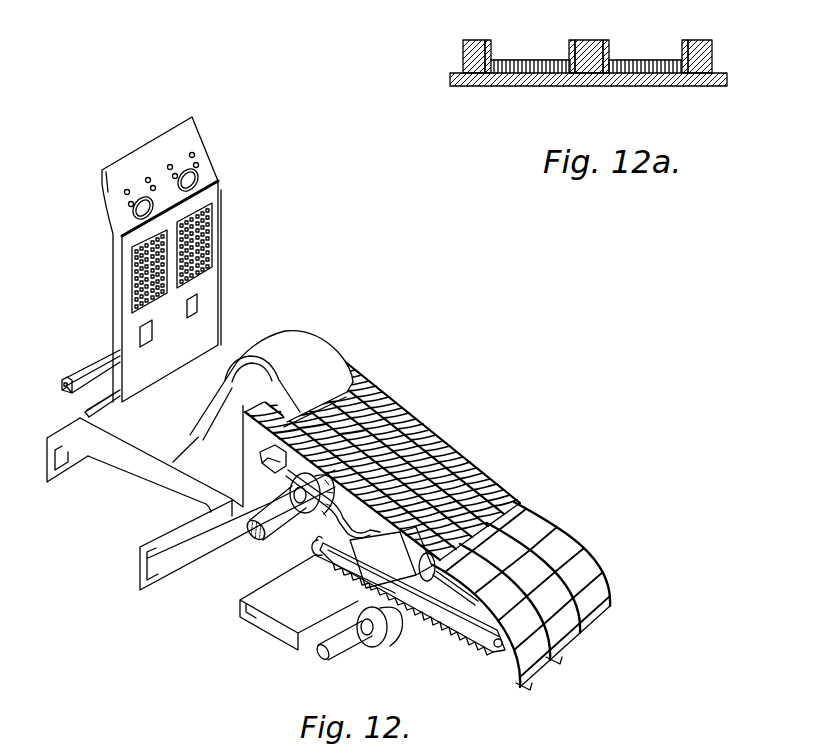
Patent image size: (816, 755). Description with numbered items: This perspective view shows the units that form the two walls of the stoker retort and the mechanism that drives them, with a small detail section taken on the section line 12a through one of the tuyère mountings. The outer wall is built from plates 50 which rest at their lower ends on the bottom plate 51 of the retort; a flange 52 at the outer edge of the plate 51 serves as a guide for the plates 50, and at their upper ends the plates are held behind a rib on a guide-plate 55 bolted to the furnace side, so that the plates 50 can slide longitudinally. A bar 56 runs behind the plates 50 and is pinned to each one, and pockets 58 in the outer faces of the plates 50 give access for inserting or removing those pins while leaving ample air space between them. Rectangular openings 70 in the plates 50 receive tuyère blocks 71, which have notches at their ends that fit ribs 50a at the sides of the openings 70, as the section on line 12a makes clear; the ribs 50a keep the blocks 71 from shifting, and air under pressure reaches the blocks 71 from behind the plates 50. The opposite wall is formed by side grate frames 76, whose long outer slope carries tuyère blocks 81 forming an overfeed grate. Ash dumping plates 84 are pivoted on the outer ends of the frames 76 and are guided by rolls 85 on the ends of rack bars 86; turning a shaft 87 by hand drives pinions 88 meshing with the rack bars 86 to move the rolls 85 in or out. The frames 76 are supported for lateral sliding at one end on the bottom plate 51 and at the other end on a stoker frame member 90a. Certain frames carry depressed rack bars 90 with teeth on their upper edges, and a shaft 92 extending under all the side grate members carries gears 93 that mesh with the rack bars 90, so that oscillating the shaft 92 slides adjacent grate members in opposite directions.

In FIG. 12A, the plates or frames 50 is at (478, 40).
In FIG. 12, the plates or frames 50 is at (220, 313).
In FIG. 12A, the ribs 50a is at (572, 62).
In FIG. 12A, the tuyère blocks 71 is at (652, 74).
In FIG. 12, the tuyère blocks 71 is at (82, 293).
In FIG. 12, the guide-plate 55 is at (195, 145).
In FIG. 12, the section line 12a is at (218, 213).
In FIG. 12, the pockets or recesses 58 is at (190, 307).
In FIG. 12, the rectangular openings 70 is at (113, 318).
In FIG. 12, the bar 56 is at (68, 378).
In FIG. 12, the flange or rib 52 is at (85, 411).
In FIG. 12, the plate or plates 51 is at (142, 435).
In FIG. 12, the frames 76 is at (325, 499).
In FIG. 12, the blocks 81 is at (418, 426).
In FIG. 12, the ash discharging or dumping plates 84 is at (560, 536).
In FIG. 12, the rolls 85 is at (497, 648).
In FIG. 12, the rack bars 86 is at (446, 650).
In FIG. 12, the shaft 87 is at (334, 655).
In FIG. 12, the pinions 88 is at (412, 640).
In FIG. 12, the depressed rack bars 90 is at (353, 543).
In FIG. 12, the stoker frame member 90a is at (270, 615).
In FIG. 12, the shaft 92 is at (262, 536).
In FIG. 12, the gears 93 is at (305, 512).